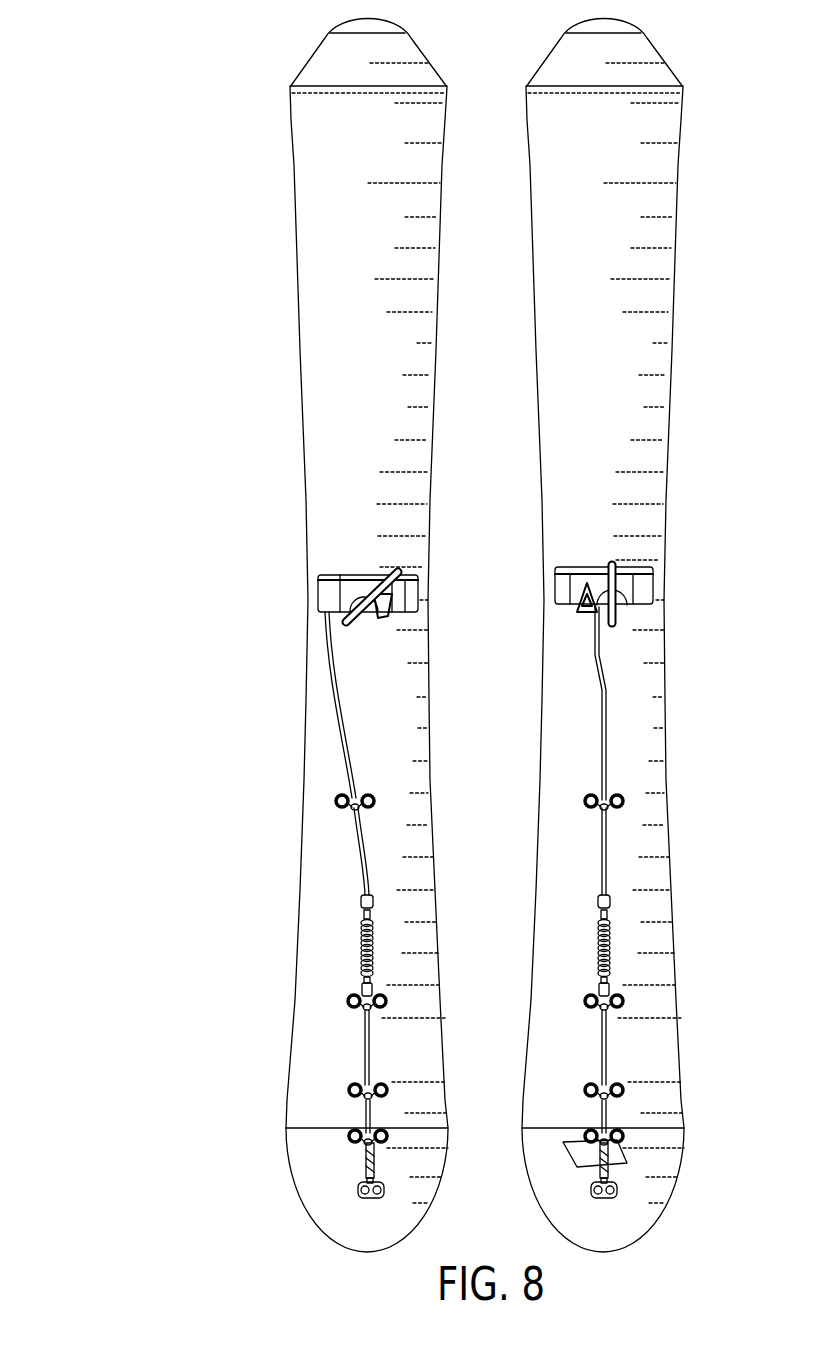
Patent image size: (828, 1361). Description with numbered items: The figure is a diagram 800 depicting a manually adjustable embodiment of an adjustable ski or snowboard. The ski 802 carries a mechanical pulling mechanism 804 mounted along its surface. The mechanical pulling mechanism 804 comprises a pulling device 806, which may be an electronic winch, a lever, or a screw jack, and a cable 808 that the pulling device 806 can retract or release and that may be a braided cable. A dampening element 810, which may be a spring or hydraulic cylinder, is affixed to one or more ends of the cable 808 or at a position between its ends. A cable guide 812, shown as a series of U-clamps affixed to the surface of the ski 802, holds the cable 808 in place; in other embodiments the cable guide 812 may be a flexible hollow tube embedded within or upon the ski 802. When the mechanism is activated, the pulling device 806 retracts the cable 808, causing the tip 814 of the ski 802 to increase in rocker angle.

The diagram 800 is at (369, 633).
The ski 802 is at (258, 92).
The mechanical pulling mechanism 804 is at (261, 857).
The pulling device 806 is at (312, 578).
The cable 808 is at (325, 680).
The dampening element 810 is at (360, 960).
The cable guide 812 is at (345, 1097).
The tip 814 is at (345, 1203).